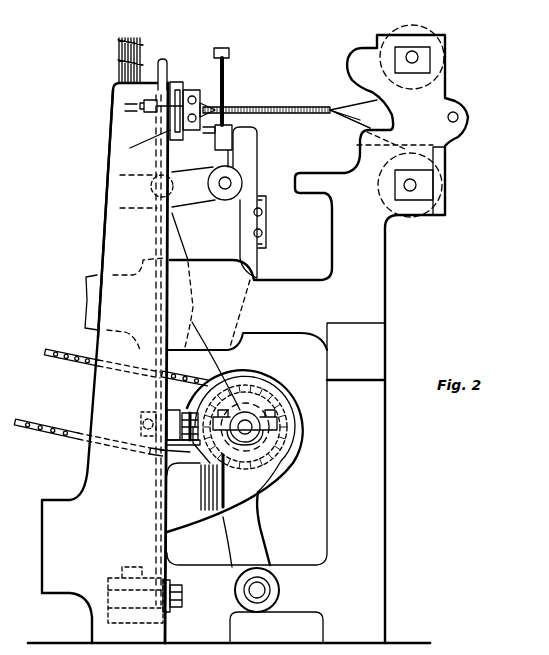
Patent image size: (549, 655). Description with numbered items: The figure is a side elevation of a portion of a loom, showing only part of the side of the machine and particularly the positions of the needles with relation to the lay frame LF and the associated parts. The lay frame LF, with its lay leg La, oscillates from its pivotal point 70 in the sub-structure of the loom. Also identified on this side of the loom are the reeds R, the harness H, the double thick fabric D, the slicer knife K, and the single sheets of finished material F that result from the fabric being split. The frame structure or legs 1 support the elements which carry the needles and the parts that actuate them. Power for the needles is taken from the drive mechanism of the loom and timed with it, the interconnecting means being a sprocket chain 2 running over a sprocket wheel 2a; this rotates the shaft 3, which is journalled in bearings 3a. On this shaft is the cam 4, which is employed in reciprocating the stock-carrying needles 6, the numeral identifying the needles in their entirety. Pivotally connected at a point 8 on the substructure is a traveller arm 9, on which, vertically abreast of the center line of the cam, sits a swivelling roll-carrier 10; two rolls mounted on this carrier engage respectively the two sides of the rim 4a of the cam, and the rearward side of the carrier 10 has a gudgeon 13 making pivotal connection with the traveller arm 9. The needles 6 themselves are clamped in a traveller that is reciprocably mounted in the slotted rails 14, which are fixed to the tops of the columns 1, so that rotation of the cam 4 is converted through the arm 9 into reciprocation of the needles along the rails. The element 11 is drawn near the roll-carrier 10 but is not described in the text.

The harness H is at (143, 46).
The traveller arm 9 is at (167, 68).
The slotted rails 14 is at (181, 84).
The stock-carrying needles 6 is at (194, 98).
The reeds R is at (230, 95).
The double thick fabric D is at (280, 107).
The lay frame LF is at (243, 130).
The slicer knife K is at (343, 120).
The single sheets of finished material F is at (371, 109).
The frame structure or legs 1 is at (123, 132).
The bearings 3a is at (211, 358).
The sprocket chain 2 is at (60, 422).
The gudgeon 13 is at (144, 416).
The swivelling roll-carrier 10 is at (163, 452).
The pawl block 11 is at (197, 452).
The cam 4 is at (262, 405).
The sprocket wheel 2a is at (280, 412).
The rim 4a is at (297, 440).
The lay leg La is at (258, 500).
The shaft 3 is at (245, 432).
The pivot point 8 is at (182, 599).
The pivotal point 70 is at (260, 590).